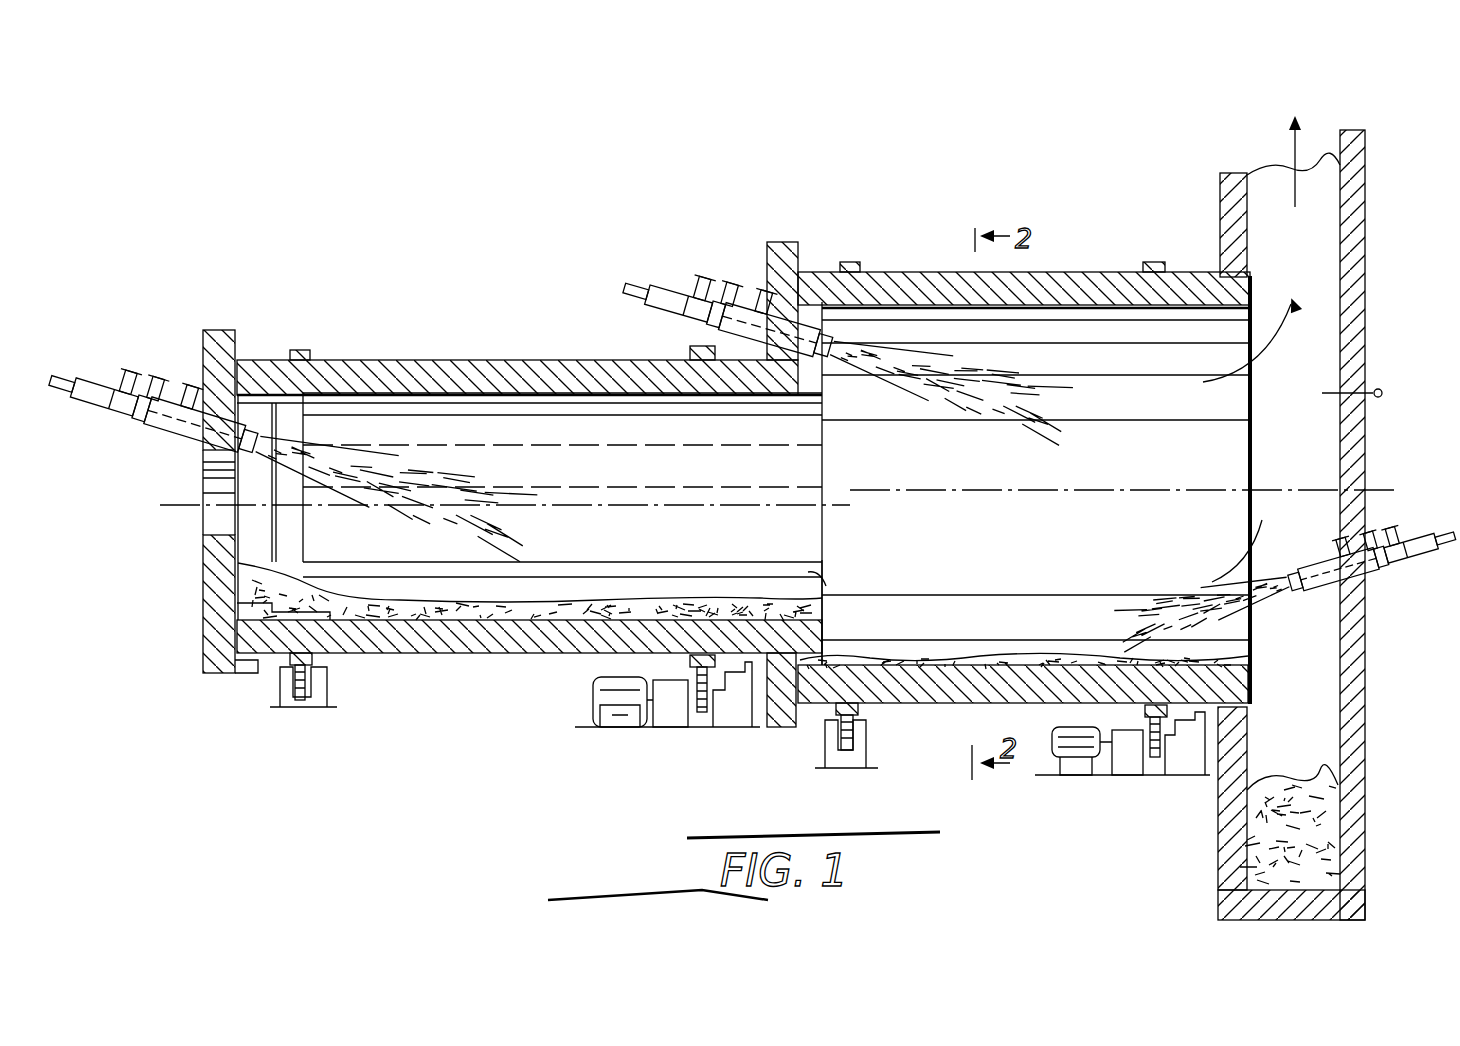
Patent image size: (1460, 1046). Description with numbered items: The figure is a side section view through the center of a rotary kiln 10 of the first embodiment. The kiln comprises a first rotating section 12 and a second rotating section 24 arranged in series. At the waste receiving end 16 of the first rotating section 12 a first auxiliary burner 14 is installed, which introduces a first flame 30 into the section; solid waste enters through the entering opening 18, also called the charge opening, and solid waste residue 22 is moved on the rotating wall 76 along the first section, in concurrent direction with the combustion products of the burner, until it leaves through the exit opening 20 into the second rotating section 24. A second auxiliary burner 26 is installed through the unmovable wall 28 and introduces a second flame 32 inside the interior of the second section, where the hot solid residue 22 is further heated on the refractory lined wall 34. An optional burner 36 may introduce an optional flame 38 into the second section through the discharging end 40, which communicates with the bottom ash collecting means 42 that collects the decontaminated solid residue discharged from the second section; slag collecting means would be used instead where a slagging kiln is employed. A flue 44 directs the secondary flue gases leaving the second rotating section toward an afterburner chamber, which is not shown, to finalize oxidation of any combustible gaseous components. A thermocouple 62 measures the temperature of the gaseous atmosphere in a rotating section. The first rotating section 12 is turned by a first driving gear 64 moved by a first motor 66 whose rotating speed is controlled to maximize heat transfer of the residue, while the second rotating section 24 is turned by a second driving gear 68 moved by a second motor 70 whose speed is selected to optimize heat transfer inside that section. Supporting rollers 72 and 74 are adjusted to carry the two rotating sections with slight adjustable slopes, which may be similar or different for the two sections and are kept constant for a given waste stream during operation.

The rotary kiln 10 is at (522, 676).
The first rotating section 12 is at (432, 372).
The first auxiliary burner 14 is at (185, 382).
The waste receiving end 16 is at (236, 334).
The entering opening 18 is at (201, 510).
The exit opening 20 is at (820, 588).
The solid waste residue 22 is at (432, 616).
The second rotating section 24 is at (940, 700).
The second auxiliary burner 26 is at (720, 287).
The unmovable wall 28 is at (790, 243).
The first flame 30 is at (445, 472).
The second flame 32 is at (990, 375).
The refractory lined wall 34 is at (1183, 312).
The optional burner 36 is at (1372, 570).
The optional flame 38 is at (1212, 582).
The discharging end 40 is at (1230, 452).
The bottom ash collecting means 42 is at (1335, 827).
The flue 44 is at (1335, 192).
The thermocouple 62 is at (1382, 391).
The first driving gear 64 is at (698, 714).
The first motor 66 is at (595, 703).
The second driving gear 68 is at (1152, 767).
The second motor 70 is at (1062, 762).
The supporting roller 72 is at (737, 676).
The supporting roller 74 is at (1185, 747).
The rotating wall 76 is at (578, 395).